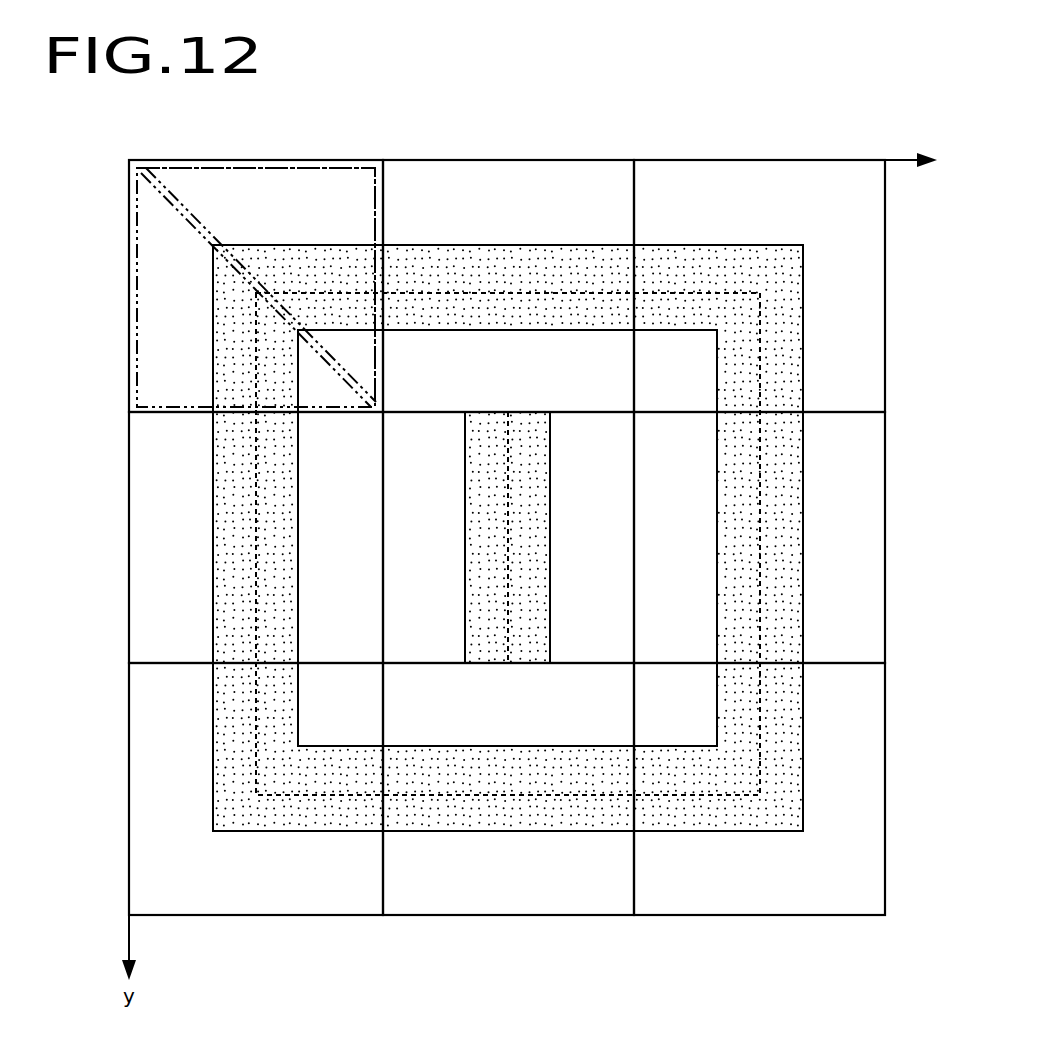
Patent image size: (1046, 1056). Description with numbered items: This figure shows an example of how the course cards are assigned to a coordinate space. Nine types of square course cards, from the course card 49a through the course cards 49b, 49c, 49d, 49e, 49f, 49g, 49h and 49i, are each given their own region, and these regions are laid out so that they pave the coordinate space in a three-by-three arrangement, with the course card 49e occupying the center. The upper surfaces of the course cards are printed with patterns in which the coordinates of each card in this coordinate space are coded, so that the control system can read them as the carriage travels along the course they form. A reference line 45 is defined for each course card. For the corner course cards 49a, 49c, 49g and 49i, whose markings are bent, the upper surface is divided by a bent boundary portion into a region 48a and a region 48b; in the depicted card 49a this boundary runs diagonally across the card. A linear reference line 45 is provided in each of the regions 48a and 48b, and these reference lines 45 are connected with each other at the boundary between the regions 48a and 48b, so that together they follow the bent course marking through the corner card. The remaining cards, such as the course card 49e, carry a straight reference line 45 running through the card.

The course card 49a is at (228, 160).
The course card 49b is at (533, 177).
The course card 49c is at (795, 177).
The course card 49d is at (150, 490).
The course card 49e is at (405, 595).
The course card 49f is at (867, 532).
The course card 49g is at (292, 897).
The course card 49h is at (538, 893).
The course card 49i is at (792, 893).
The region 48a is at (137, 355).
The region 48b is at (325, 162).
The reference line 45 is at (768, 368).